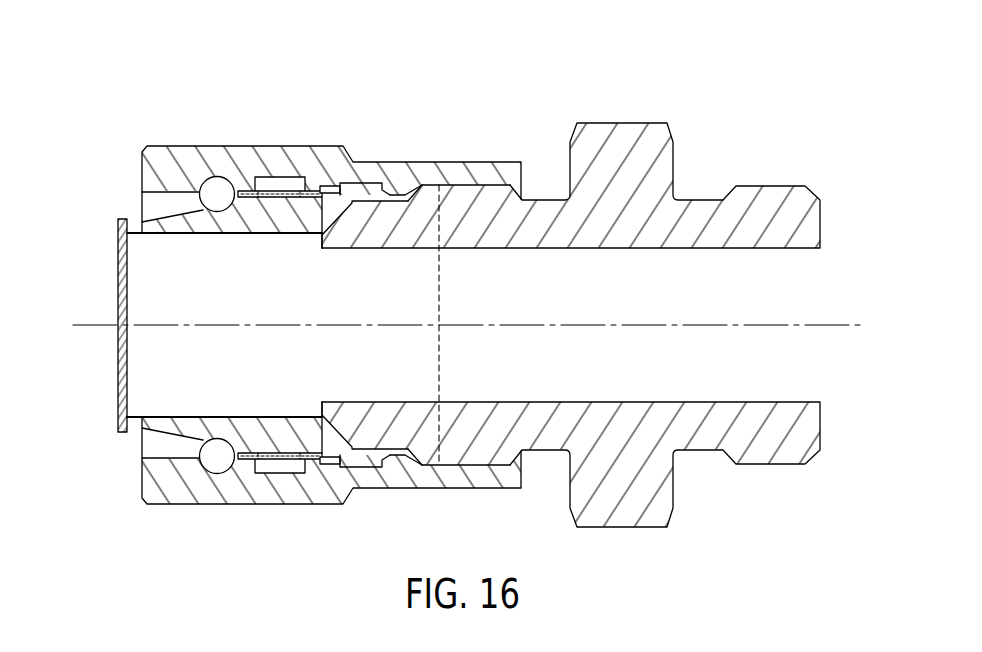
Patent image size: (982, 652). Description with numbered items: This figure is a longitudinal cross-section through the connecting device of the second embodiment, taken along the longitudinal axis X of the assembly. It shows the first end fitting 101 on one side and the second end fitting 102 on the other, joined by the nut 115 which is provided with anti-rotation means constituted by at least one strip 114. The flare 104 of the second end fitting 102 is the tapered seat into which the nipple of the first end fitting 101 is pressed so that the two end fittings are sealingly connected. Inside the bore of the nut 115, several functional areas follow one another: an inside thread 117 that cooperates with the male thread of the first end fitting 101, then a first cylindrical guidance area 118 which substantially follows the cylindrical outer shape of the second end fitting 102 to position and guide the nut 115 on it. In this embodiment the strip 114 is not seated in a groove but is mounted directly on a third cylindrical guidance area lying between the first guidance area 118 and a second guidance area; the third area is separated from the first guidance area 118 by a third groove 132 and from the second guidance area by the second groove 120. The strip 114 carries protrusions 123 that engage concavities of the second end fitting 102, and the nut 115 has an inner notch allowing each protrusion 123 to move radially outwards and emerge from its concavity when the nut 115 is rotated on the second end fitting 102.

The longitudinal axis X is at (95, 325).
The first end fitting 101 is at (566, 279).
The second end fitting 102 is at (140, 422).
The flare 104 is at (336, 222).
The strip 114 is at (250, 190).
The nut 115 is at (326, 326).
The inside thread 117 is at (475, 183).
The first cylindrical guidance area 118 is at (402, 192).
The second groove 120 is at (218, 473).
The protrusion 123 is at (284, 470).
The third groove 132 is at (365, 470).